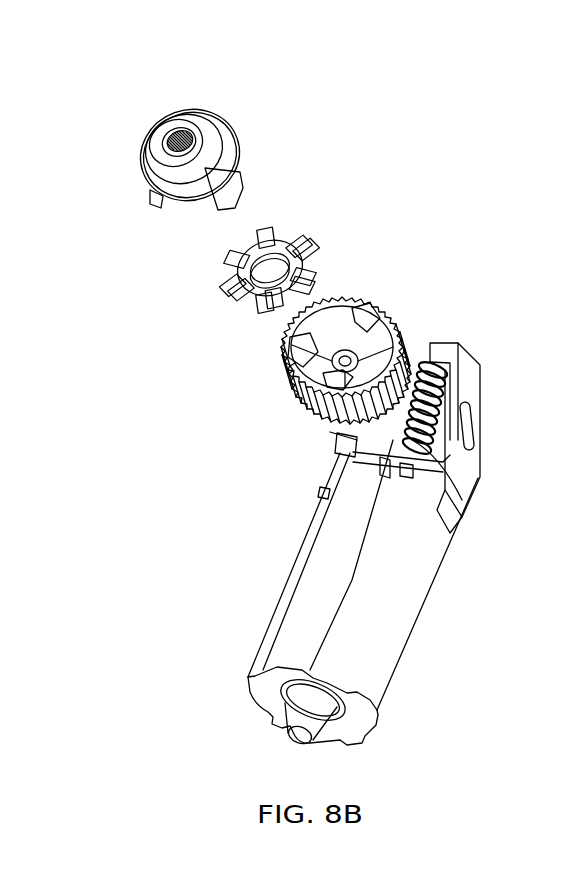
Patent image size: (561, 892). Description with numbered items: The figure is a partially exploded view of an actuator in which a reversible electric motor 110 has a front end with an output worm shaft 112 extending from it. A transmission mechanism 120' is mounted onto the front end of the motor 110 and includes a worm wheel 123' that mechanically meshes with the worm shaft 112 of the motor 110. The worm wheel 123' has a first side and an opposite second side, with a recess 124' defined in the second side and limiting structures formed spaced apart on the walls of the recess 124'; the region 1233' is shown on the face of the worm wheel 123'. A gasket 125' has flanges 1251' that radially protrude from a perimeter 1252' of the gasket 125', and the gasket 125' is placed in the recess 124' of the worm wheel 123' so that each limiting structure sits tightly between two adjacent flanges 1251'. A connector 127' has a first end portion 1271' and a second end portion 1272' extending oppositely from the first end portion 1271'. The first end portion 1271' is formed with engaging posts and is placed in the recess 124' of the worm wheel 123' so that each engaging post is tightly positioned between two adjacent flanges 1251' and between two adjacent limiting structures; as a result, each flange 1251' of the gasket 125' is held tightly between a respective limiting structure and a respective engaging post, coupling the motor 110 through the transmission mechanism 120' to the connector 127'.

The motor 110 is at (317, 598).
The output worm shaft 112 is at (415, 420).
The transmission mechanism 120' is at (393, 306).
The worm wheel 123' is at (303, 360).
The gear pocket 1233' is at (238, 375).
The recess 124' is at (369, 314).
The gasket 125' is at (245, 270).
The flanges 1251' is at (270, 267).
The perimeter 1252' is at (302, 248).
The connector 127' is at (181, 160).
The first end portion 1271' is at (270, 177).
The second end portion 1272' is at (111, 136).